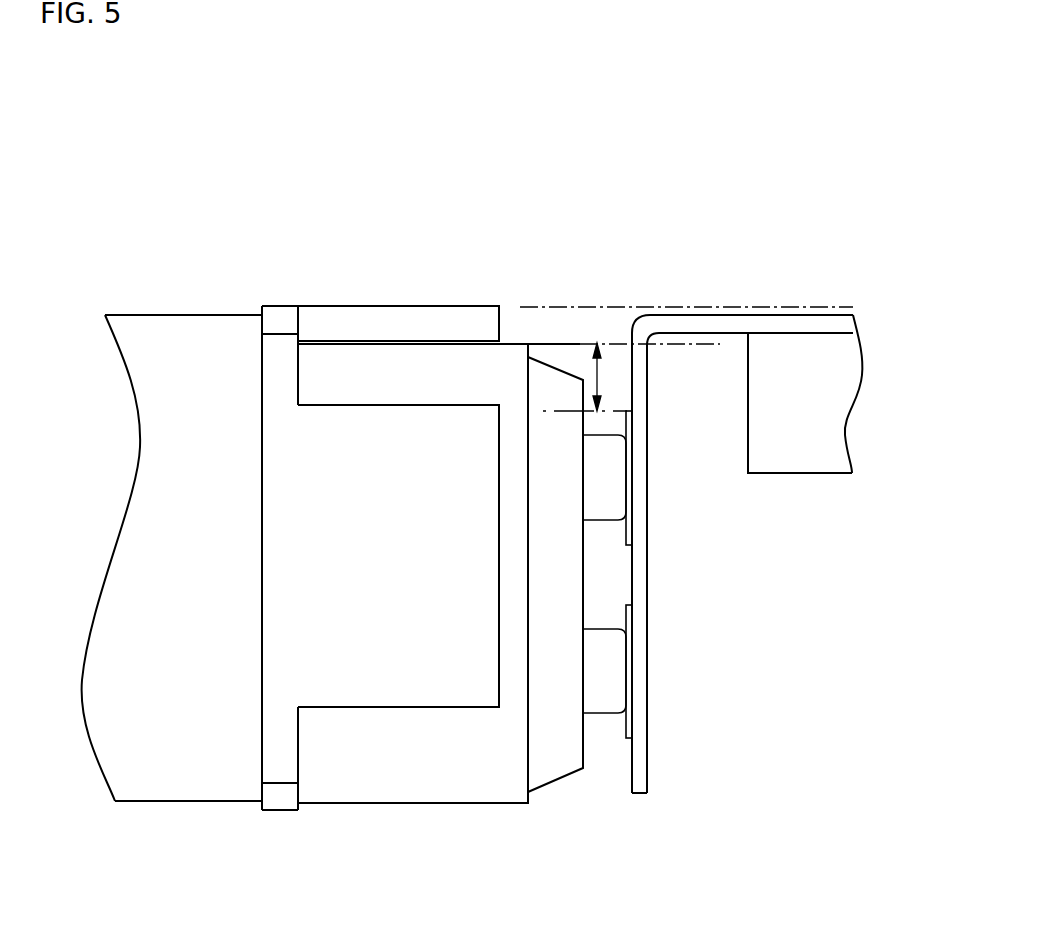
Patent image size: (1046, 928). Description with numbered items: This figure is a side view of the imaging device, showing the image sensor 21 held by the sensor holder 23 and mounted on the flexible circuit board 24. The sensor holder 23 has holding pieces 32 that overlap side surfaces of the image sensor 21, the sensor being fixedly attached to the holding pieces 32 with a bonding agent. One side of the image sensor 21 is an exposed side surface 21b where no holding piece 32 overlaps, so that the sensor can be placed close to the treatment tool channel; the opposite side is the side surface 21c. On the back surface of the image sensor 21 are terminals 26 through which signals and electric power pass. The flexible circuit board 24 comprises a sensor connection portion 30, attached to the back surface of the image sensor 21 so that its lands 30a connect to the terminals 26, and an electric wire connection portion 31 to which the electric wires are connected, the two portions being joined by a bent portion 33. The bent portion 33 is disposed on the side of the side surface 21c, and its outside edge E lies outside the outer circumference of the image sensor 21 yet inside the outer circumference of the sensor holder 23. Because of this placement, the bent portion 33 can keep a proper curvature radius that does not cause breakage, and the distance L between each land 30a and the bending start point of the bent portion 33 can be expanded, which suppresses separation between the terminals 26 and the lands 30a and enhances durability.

The image sensor 21 is at (410, 805).
The exposed side surface 21b is at (486, 806).
The side surface 21c is at (514, 342).
The sensor holder 23 is at (190, 318).
The flexible circuit board 24 is at (715, 476).
The terminals 26 is at (618, 487).
The sensor connection portion 30 is at (624, 352).
The lands 30a is at (630, 423).
The electric wire connection portion 31 is at (751, 274).
The holding pieces 32 is at (362, 307).
The bent portion 33 is at (632, 327).
The outside edge E is at (650, 318).
The distance L is at (585, 377).